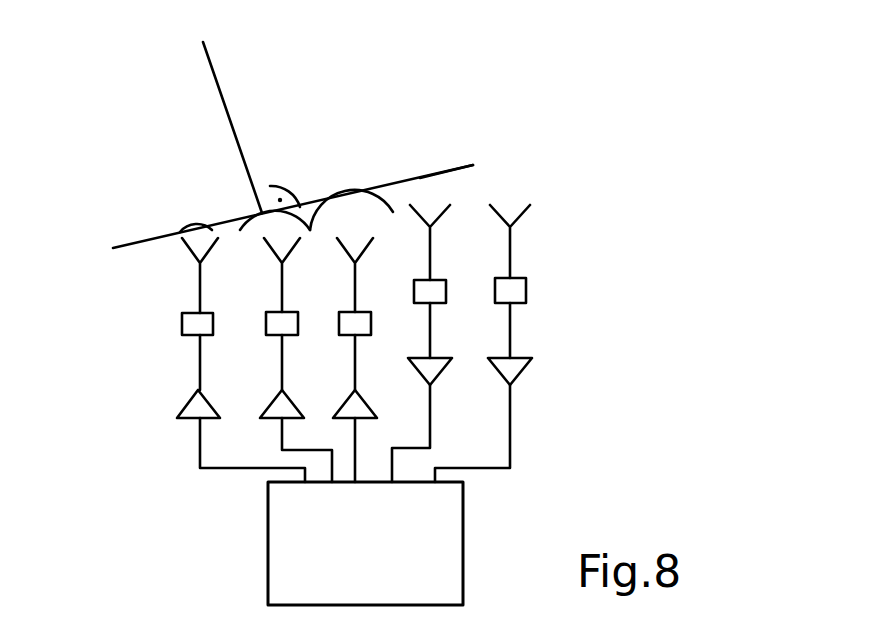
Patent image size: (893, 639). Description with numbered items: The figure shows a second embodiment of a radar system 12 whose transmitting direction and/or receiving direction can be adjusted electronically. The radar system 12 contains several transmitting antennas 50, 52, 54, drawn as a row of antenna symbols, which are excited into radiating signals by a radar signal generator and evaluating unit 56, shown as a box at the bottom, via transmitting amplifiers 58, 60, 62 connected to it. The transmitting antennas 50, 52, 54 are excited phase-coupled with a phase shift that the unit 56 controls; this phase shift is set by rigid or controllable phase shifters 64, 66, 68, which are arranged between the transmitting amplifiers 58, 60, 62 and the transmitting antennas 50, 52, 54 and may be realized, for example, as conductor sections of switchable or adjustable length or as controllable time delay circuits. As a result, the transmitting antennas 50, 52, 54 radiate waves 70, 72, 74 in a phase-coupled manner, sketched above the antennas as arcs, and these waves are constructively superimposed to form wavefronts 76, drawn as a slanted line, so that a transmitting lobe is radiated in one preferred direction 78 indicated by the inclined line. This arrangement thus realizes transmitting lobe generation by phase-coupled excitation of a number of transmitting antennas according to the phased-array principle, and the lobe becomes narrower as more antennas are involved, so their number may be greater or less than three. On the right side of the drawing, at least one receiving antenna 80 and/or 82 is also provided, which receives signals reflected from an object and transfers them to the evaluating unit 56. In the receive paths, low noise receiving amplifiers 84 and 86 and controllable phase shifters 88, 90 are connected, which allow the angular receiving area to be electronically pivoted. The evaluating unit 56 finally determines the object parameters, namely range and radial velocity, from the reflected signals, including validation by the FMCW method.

The radar system 12 is at (582, 328).
The transmitting antenna 50 is at (200, 285).
The transmitting antenna 52 is at (282, 276).
The transmitting antenna 54 is at (355, 276).
The radar signal generator and evaluating unit 56 is at (463, 542).
The transmitting amplifier 58 is at (187, 420).
The transmitting amplifier 60 is at (273, 415).
The transmitting amplifier 62 is at (345, 418).
The phase shifter 64 is at (182, 328).
The phase shifter 66 is at (263, 328).
The phase shifter 68 is at (337, 328).
The wave 70 is at (207, 222).
The wave 72 is at (257, 212).
The wave 74 is at (383, 193).
The wavefront 76 is at (448, 167).
The preferred direction 78 is at (238, 117).
The receiving antenna 80 is at (437, 207).
The receiving antenna 82 is at (527, 210).
The low noise receiving amplifier 84 is at (445, 373).
The low noise receiving amplifier 86 is at (523, 372).
The controllable phase shifter 88 is at (437, 280).
The controllable phase shifter 90 is at (527, 287).